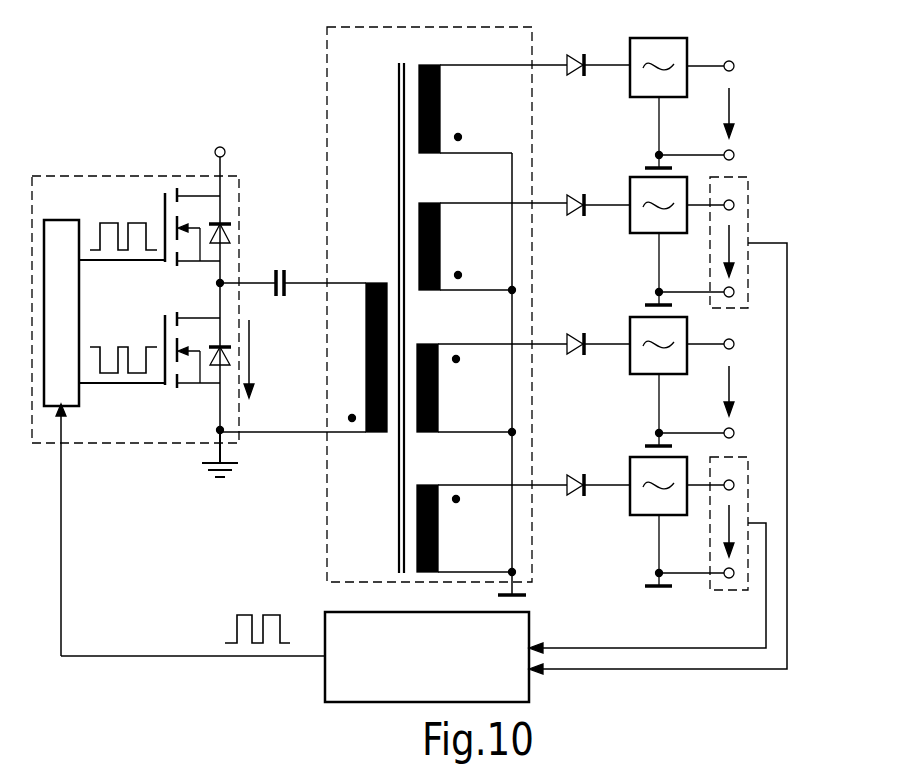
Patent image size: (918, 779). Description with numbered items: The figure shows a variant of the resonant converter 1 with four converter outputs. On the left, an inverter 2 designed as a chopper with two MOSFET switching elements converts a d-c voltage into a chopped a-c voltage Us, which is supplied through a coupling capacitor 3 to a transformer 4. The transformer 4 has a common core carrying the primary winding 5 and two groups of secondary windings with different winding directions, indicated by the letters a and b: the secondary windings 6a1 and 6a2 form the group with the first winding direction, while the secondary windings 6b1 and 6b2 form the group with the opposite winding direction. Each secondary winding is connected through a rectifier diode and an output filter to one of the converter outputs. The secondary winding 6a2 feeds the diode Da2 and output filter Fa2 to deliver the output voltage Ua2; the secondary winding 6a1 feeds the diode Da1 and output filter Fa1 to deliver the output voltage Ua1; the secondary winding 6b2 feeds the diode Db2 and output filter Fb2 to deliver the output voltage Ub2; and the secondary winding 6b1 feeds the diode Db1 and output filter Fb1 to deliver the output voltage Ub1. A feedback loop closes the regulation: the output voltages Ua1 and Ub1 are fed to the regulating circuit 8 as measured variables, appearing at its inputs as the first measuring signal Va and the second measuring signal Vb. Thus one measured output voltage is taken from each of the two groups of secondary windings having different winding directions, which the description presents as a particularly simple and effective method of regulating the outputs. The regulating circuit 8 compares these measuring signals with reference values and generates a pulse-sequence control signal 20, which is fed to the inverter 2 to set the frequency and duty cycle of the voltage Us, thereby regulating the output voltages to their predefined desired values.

The resonant converter 1 is at (86, 708).
The inverter 2 is at (136, 176).
The capacitor 3 is at (280, 268).
The transformer 4 is at (327, 68).
The primary winding 5 is at (378, 283).
The secondary winding 6a2 is at (441, 101).
The secondary winding 6a1 is at (441, 239).
The secondary winding 6b2 is at (439, 379).
The secondary winding 6b1 is at (439, 519).
The regulating circuit 8 is at (374, 703).
The control signal 20 is at (232, 630).
The diode Da2 is at (567, 58).
The diode Da1 is at (567, 197).
The diode Db1 is at (567, 336).
The diode Db2 is at (567, 476).
The output filter Fa2 is at (640, 97).
The output filter Fa1 is at (640, 233).
The output filter Fb2 is at (640, 374).
The output filter Fb1 is at (640, 515).
The output voltage Ua2 is at (733, 94).
The output voltage Ua1 is at (733, 232).
The output voltage Ub2 is at (733, 372).
The output voltage Ub1 is at (733, 511).
The a-c voltage Us is at (264, 359).
The first measuring signal Va is at (733, 670).
The second measuring signal Vb is at (620, 648).